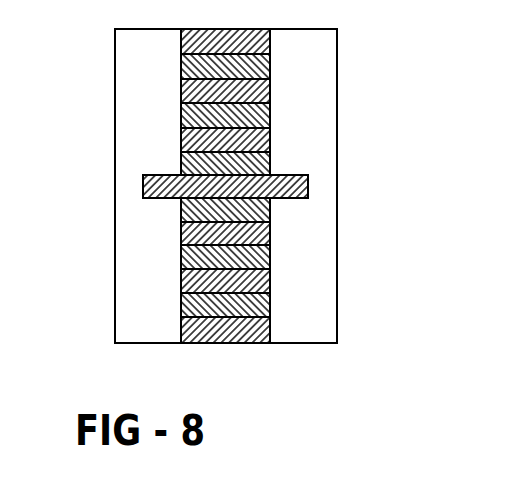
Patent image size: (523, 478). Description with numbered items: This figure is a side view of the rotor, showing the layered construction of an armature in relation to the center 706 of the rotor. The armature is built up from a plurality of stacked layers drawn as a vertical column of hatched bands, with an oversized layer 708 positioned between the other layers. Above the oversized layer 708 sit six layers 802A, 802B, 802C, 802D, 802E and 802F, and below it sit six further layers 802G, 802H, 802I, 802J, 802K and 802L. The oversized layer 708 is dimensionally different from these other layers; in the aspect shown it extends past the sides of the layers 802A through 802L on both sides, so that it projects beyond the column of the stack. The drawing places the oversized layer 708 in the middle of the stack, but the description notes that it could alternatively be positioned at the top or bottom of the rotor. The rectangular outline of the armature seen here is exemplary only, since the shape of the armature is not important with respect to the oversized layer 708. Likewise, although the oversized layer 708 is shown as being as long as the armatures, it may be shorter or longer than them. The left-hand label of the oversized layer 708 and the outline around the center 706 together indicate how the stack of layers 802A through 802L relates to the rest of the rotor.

The center 706 is at (337, 290).
The oversized layer 708 is at (398, 193).
The layer 802A is at (272, 40).
The layer 802B is at (272, 65).
The layer 802C is at (272, 87).
The layer 802D is at (272, 110).
The layer 802E is at (272, 132).
The layer 802F is at (272, 155).
The layer 802G is at (181, 207).
The layer 802H is at (181, 233).
The layer 802I is at (181, 255).
The layer 802J is at (181, 275).
The layer 802K is at (181, 300).
The layer 802L is at (181, 323).